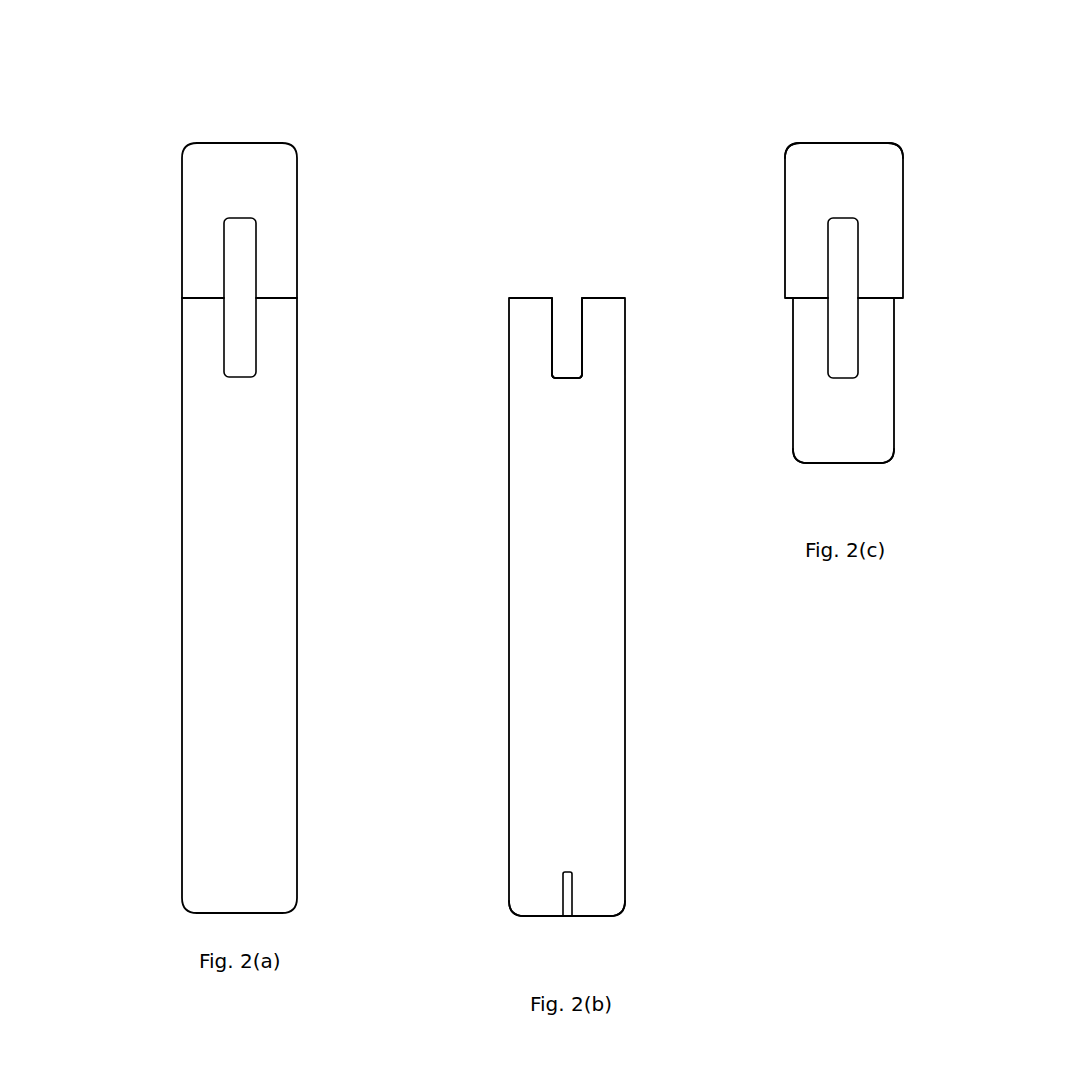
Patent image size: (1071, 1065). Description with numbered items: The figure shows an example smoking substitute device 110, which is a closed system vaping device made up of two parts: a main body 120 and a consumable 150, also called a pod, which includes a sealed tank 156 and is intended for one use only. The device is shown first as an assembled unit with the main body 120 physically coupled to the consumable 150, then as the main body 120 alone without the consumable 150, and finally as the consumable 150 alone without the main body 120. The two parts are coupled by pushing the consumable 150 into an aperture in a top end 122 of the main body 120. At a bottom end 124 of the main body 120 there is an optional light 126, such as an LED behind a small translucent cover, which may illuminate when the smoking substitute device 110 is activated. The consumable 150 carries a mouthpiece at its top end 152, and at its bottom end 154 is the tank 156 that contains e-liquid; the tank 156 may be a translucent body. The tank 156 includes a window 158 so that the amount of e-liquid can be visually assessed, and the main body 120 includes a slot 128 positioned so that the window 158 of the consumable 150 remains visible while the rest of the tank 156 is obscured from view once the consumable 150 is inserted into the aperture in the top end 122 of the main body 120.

In FIG. 2A, the smoking substitute device 110 is at (152, 72).
In FIG. 2A, the main body 120 is at (177, 612).
In FIG. 2B, the main body 120 is at (509, 623).
In FIG. 2B, the top end 122 is at (571, 289).
In FIG. 2B, the bottom end 124 is at (591, 926).
In FIG. 2B, the light 126 is at (560, 897).
In FIG. 2B, the slot 128 is at (565, 336).
In FIG. 2A, the consumable 150 is at (185, 215).
In FIG. 2C, the consumable 150 is at (785, 167).
In FIG. 2C, the top end 152 is at (854, 129).
In FIG. 2C, the bottom end 154 is at (859, 473).
In FIG. 2C, the tank 156 is at (835, 426).
In FIG. 2C, the window 158 is at (850, 277).